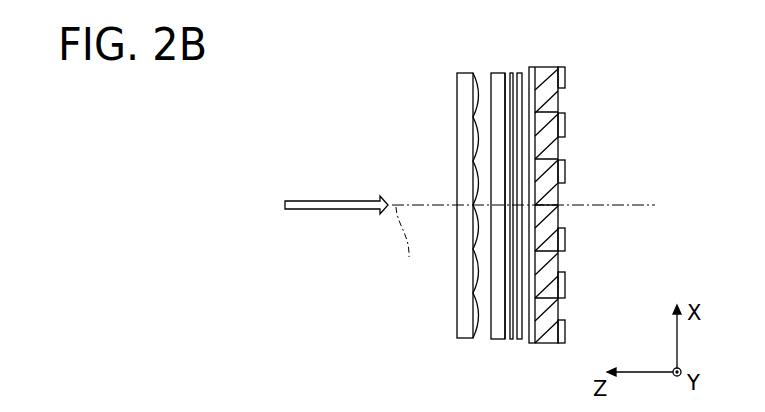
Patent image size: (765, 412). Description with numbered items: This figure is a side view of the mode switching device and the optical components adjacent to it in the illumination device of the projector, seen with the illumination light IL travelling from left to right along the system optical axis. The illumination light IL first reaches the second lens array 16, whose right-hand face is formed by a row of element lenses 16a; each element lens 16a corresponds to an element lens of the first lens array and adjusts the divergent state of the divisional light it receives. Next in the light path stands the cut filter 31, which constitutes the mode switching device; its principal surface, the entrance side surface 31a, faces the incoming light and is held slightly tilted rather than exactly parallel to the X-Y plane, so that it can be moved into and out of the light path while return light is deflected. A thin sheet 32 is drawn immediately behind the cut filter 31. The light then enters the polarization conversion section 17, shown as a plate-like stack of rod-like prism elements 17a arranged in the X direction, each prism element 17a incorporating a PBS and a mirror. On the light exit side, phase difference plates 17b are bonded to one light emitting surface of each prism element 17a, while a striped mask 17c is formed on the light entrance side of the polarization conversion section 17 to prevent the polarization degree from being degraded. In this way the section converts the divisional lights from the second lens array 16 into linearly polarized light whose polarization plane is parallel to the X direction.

The second lens array 16 is at (423, 177).
The element lens 16a is at (477, 92).
The polarization conversion section 17 is at (578, 179).
The prism element 17a is at (553, 150).
The phase difference plate 17b is at (564, 127).
The striped mask 17c is at (532, 67).
The cut filter 31 is at (559, 234).
The entrance side surface 31a is at (500, 189).
The optical sheet 32 is at (518, 340).
The illumination light IL is at (325, 209).